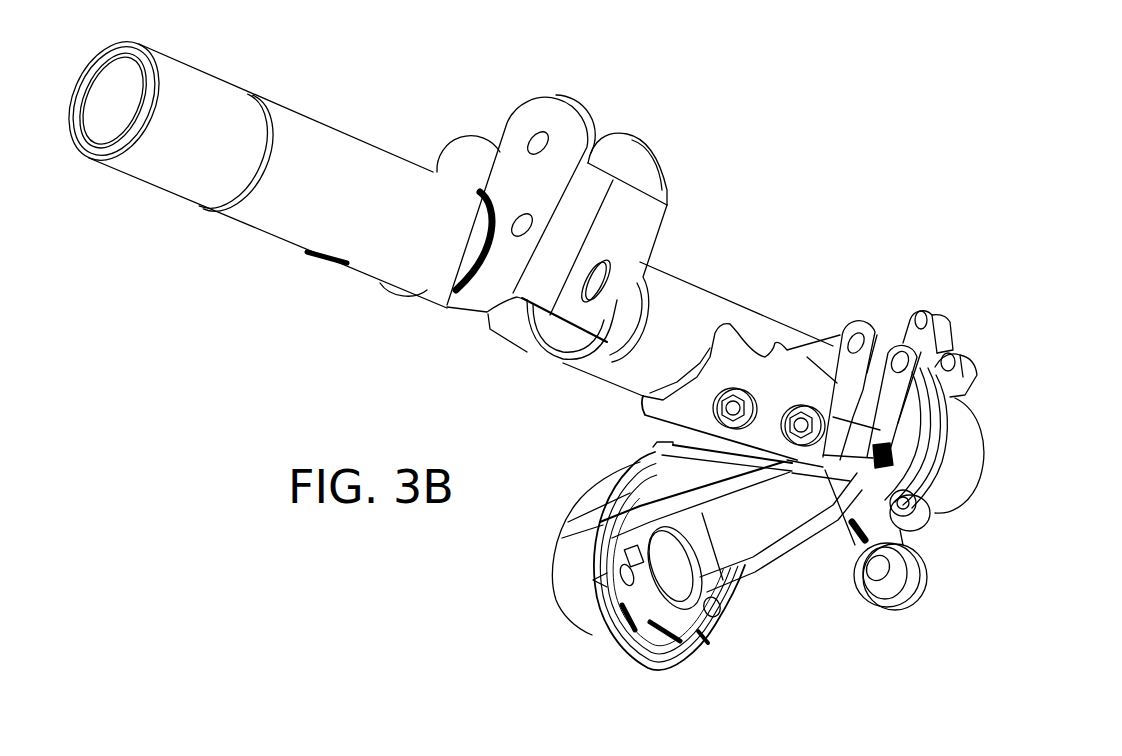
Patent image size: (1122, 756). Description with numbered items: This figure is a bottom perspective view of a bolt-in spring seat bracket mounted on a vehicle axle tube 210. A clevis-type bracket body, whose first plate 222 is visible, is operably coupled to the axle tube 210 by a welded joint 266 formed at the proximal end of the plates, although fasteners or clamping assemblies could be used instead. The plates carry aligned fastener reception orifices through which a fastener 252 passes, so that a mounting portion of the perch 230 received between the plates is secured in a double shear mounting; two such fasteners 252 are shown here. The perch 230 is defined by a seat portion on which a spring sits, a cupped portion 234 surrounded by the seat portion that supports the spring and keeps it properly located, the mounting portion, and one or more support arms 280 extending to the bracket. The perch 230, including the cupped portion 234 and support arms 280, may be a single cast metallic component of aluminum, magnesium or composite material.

The axle tube 210 is at (203, 82).
The first plate 222 is at (784, 382).
The perch 230 is at (567, 638).
The cupped portion 234 is at (567, 552).
The fastener 252 is at (727, 398).
The welded joint 266 is at (698, 368).
The support arm 280 is at (775, 525).